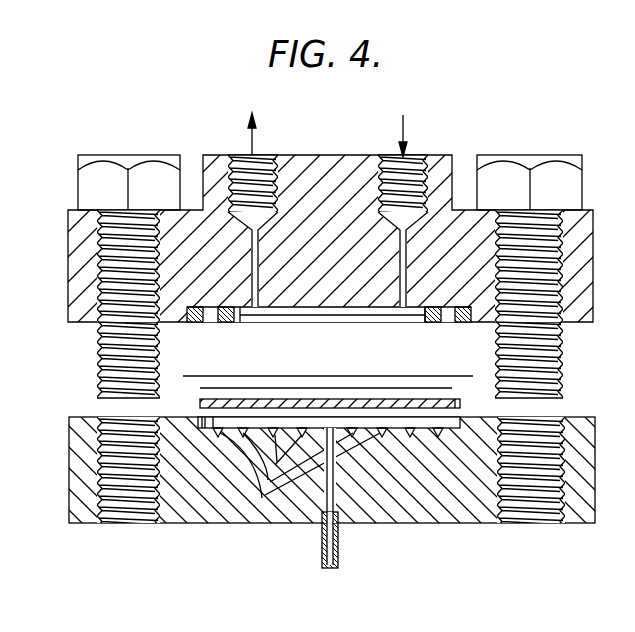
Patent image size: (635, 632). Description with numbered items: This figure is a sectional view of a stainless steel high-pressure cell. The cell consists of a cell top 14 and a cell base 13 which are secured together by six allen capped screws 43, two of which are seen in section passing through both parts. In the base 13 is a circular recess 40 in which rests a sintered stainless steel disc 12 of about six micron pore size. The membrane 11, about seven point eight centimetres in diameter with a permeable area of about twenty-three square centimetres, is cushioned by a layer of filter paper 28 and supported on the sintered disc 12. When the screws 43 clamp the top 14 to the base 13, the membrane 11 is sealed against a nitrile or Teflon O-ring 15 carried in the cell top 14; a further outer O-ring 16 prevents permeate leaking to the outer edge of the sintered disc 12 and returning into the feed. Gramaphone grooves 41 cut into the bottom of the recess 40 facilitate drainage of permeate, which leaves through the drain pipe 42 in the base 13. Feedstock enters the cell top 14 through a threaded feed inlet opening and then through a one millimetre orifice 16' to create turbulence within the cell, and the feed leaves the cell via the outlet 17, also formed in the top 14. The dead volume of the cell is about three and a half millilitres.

The membrane 11 is at (353, 375).
The sintered stainless steel disc 12 is at (203, 428).
The cell base 13 is at (596, 523).
The cell top 14 is at (594, 302).
The O-ring 15 is at (225, 324).
The feed inlet opening 16 is at (440, 335).
The orifice 16' is at (422, 210).
The outlet 17 is at (256, 178).
The filter paper 28 is at (452, 389).
The circular recess 40 is at (428, 424).
The gramaphone grooves 41 is at (262, 498).
The drain pipe 42 is at (340, 552).
The allen capped screws 43 is at (152, 172).